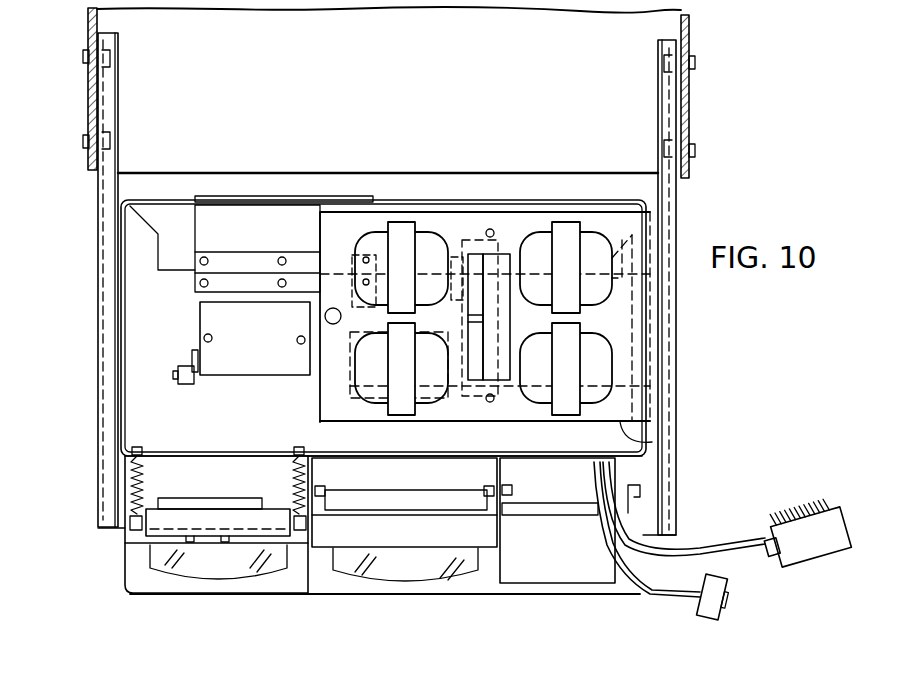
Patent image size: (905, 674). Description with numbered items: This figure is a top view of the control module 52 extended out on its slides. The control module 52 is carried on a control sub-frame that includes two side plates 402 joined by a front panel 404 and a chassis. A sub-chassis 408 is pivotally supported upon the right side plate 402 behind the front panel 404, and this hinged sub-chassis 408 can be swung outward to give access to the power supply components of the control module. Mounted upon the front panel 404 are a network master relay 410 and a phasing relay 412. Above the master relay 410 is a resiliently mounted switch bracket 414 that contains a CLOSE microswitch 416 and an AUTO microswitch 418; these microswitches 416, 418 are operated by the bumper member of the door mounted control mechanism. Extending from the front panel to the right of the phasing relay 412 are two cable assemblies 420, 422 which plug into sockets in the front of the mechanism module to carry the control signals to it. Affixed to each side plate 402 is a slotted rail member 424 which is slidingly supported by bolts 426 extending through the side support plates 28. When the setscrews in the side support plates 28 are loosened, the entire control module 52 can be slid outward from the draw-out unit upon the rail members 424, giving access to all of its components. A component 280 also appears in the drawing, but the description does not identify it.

The side support plate 28 is at (90, 21).
The bolt 426 is at (84, 57).
The slotted rail member 424 is at (98, 181).
The side plate 402 is at (124, 301).
The control box 280 is at (215, 322).
The front panel 404 is at (160, 452).
The sub-chassis 408 is at (618, 424).
The network master relay 410 is at (148, 556).
The phasing relay 412 is at (473, 565).
The switch bracket 414 is at (170, 520).
The CLOSE microswitch 416 is at (190, 542).
The AUTO microswitch 418 is at (225, 542).
The cable assembly 420 is at (668, 600).
The cable assembly 422 is at (690, 555).
The control module 52 is at (375, 637).